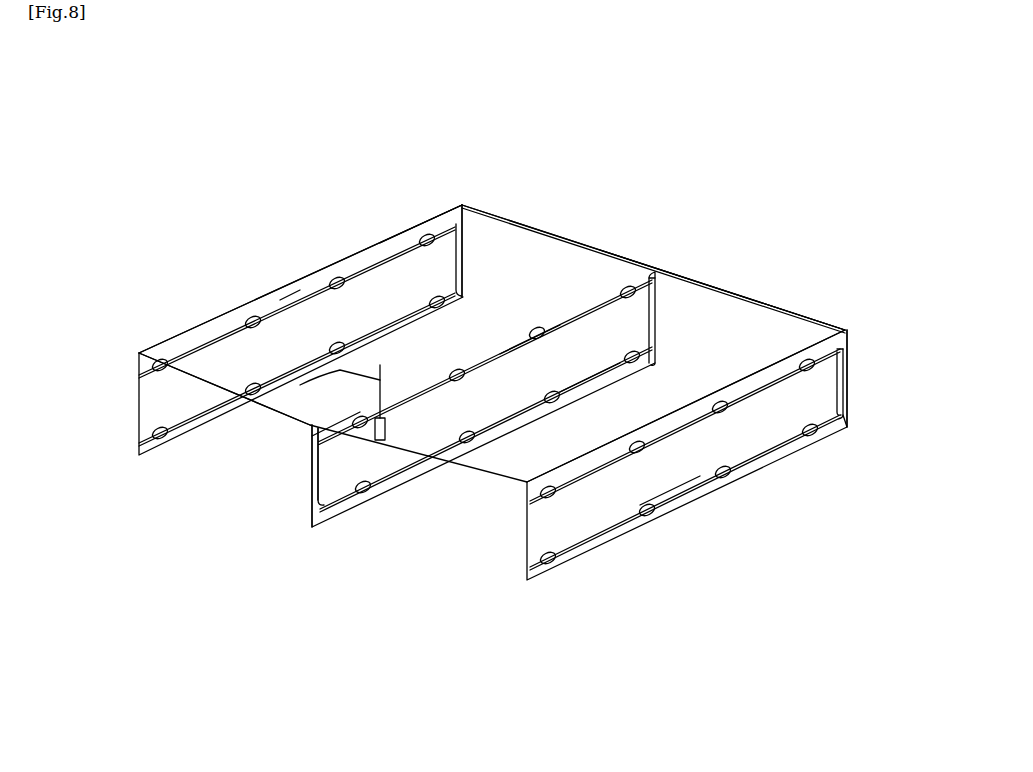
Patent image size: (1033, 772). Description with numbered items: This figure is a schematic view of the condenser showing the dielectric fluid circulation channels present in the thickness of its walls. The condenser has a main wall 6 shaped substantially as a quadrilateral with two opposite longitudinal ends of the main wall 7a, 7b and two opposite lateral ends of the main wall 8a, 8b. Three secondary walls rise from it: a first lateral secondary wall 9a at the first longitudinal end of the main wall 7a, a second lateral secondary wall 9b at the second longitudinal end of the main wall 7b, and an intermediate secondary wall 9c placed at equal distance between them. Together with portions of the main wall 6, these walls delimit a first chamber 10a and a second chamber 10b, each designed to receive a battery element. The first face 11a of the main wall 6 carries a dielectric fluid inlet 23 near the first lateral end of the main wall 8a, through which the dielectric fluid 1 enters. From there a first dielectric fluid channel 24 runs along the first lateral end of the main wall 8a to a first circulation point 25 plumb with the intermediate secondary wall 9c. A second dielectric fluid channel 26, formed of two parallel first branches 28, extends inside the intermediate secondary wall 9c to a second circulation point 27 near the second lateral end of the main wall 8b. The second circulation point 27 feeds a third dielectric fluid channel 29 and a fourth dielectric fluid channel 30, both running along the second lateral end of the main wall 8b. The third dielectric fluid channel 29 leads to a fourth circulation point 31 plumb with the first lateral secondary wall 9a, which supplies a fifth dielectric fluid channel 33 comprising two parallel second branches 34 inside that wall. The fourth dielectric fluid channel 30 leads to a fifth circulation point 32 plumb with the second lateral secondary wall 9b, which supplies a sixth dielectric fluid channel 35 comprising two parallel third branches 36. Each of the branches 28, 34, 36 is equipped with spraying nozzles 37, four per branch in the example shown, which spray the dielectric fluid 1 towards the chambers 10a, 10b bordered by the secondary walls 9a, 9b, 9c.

The dielectric fluid 1 is at (311, 426).
The main wall 6 is at (387, 250).
The first longitudinal end of the main wall 7a is at (387, 250).
The second longitudinal end of the main wall 7b is at (800, 360).
The first lateral end of the main wall 8a is at (462, 467).
The second lateral end of the main wall 8b is at (660, 276).
The first lateral secondary wall 9a is at (139, 400).
The second lateral secondary wall 9b is at (527, 532).
The intermediate secondary wall 9c is at (310, 478).
The first chamber 10a is at (179, 458).
The second chamber 10b is at (392, 520).
The first face of the main wall 11a is at (293, 292).
The dielectric fluid inlet 23 is at (318, 500).
The first dielectric fluid channel 24 is at (318, 490).
The first circulation point of the dielectric fluid 25 is at (328, 432).
The second dielectric fluid channel 26 is at (313, 437).
The second circulation point for the dielectric fluid 27 is at (652, 275).
The first branches for circulation of the dielectric fluid 28 is at (540, 333).
The third dielectric fluid channel 29 is at (514, 221).
The fourth dielectric fluid channel 30 is at (748, 296).
The fourth point for circulation of the dielectric fluid 31 is at (458, 203).
The fifth point for circulation of the dielectric fluid 32 is at (845, 330).
The fifth dielectric fluid channel 33 is at (447, 224).
The second branches for circulation of the dielectric fluid 34 is at (197, 345).
The sixth dielectric fluid channel 35 is at (848, 343).
The third branches for circulation of the dielectric fluid 36 is at (844, 418).
The spraying nozzles 37 is at (253, 384).